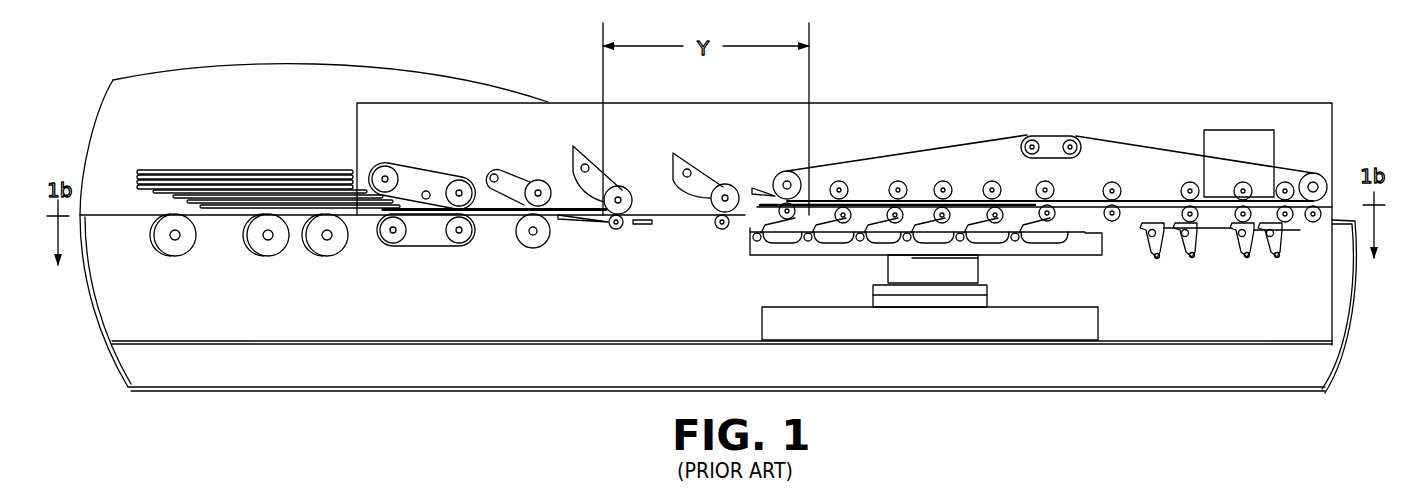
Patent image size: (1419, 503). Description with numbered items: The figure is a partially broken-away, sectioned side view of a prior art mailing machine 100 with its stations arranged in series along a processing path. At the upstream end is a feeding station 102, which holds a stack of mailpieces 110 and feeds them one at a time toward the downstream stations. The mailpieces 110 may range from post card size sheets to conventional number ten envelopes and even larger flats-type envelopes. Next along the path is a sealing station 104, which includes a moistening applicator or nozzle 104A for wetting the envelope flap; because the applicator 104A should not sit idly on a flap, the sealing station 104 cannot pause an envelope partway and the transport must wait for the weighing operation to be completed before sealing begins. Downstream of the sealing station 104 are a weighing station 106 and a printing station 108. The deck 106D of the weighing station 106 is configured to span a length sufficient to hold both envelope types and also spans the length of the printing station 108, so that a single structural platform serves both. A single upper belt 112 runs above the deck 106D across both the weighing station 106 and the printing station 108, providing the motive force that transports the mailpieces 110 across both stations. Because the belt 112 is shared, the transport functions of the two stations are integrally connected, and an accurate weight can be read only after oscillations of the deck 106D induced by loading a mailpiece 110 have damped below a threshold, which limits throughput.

The mailing machine 100 is at (513, 63).
The feeding station 102 is at (232, 107).
The sealing station 104 is at (642, 168).
The moistening applicator or nozzle 104A is at (645, 229).
The weighing station 106 is at (902, 132).
The deck 106D is at (1137, 220).
The printing station 108 is at (1228, 118).
The mailpieces 110 is at (237, 174).
The upper belt 112 is at (1050, 136).